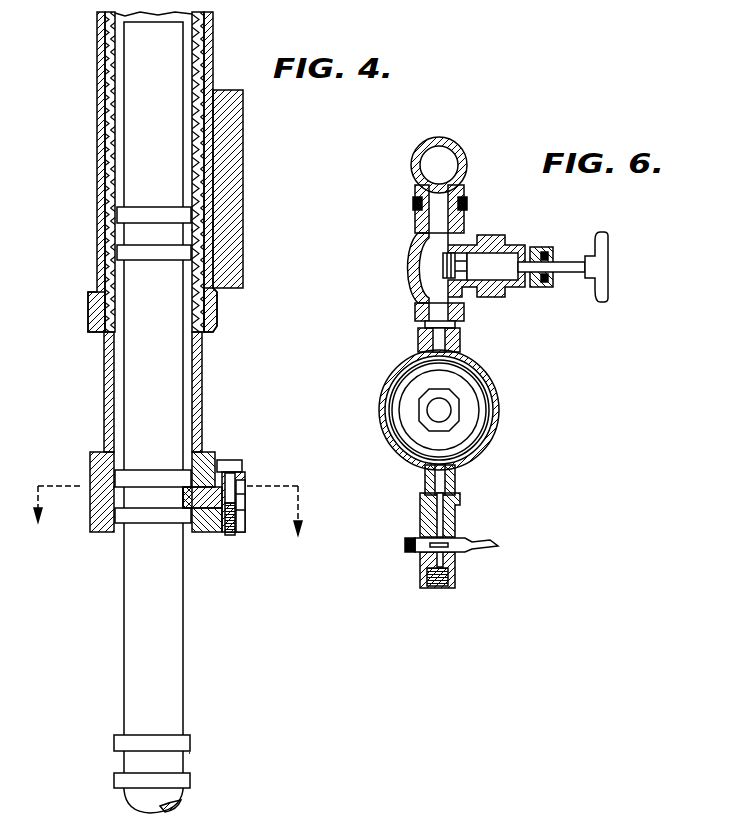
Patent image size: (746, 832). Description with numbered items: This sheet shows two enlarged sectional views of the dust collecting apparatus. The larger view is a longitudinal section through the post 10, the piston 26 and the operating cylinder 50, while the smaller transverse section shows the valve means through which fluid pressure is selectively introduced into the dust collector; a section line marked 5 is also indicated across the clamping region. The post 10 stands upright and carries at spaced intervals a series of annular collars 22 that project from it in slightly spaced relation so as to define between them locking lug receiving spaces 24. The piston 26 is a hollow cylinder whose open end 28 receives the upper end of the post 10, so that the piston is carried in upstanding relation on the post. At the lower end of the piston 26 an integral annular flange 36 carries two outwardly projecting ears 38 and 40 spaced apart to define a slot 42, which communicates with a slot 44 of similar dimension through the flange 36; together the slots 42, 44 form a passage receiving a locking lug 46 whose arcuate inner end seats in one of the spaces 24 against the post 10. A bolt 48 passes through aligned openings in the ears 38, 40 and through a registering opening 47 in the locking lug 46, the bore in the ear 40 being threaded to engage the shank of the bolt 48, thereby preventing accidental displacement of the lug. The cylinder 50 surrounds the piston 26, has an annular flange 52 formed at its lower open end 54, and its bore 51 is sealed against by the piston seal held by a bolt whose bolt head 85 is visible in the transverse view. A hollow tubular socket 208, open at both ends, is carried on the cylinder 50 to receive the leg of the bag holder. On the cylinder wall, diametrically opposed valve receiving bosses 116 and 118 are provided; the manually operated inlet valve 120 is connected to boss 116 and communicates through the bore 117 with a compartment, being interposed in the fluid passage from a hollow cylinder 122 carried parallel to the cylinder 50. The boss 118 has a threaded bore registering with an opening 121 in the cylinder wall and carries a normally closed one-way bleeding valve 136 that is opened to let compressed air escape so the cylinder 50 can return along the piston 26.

In FIG. 4, the section line 5- 5 is at (175, 512).
In FIG. 4, the post 10 is at (128, 70).
In FIG. 4, the collars 22 is at (117, 250).
In FIG. 4, the locking lug receiving spaces 24 is at (185, 229).
In FIG. 4, the piston 26 is at (102, 382).
In FIG. 4, the open end 28 is at (190, 534).
In FIG. 4, the annular flange 36 is at (92, 522).
In FIG. 4, the ear 38 is at (244, 480).
In FIG. 4, the ear 40 is at (236, 533).
In FIG. 4, the slot 42 is at (240, 490).
In FIG. 4, the slot 44 is at (204, 486).
In FIG. 4, the locking lug 46 is at (243, 506).
In FIG. 4, the opening 47 is at (243, 497).
In FIG. 4, the bolt 48 is at (244, 466).
In FIG. 4, the cylinder 50 is at (96, 111).
In FIG. 6, the cylinder 50 is at (502, 408).
In FIG. 4, the bore 51 is at (198, 52).
In FIG. 6, the bore 51 is at (478, 446).
In FIG. 4, the annular flange 52 is at (217, 320).
In FIG. 4, the lower open end 54 is at (103, 334).
In FIG. 6, the bolt head 85 is at (454, 402).
In FIG. 6, the valve receiving boss 116 is at (458, 344).
In FIG. 6, the bore 117 is at (425, 342).
In FIG. 6, the valve receiving boss 118 is at (420, 354).
In FIG. 6, the valve 120 is at (512, 240).
In FIG. 6, the opening 121 is at (437, 468).
In FIG. 6, the hollow cylinder 122 is at (463, 158).
In FIG. 6, the bleeding valve 136 is at (416, 563).
In FIG. 4, the hollow tubular socket 208 is at (243, 168).